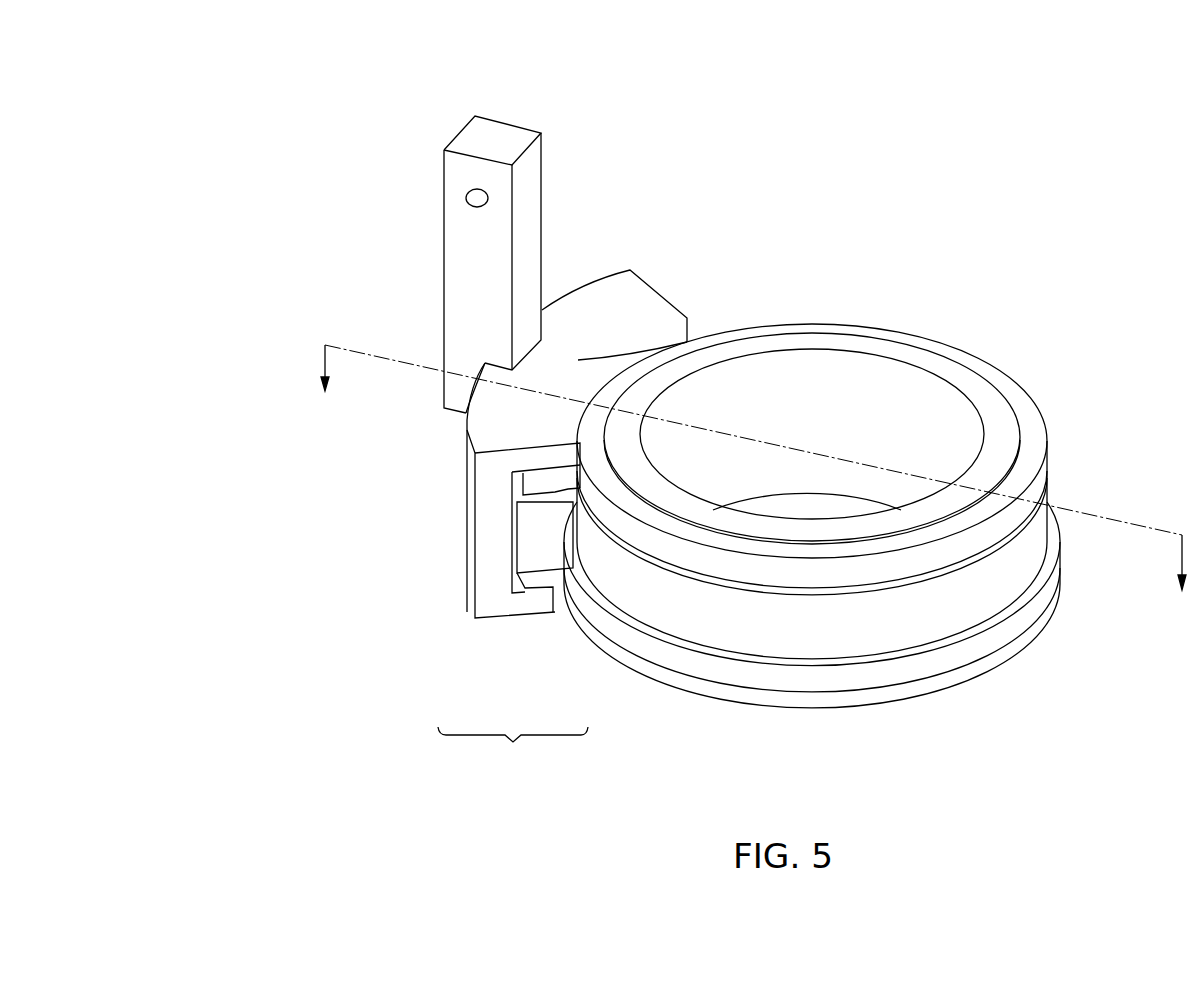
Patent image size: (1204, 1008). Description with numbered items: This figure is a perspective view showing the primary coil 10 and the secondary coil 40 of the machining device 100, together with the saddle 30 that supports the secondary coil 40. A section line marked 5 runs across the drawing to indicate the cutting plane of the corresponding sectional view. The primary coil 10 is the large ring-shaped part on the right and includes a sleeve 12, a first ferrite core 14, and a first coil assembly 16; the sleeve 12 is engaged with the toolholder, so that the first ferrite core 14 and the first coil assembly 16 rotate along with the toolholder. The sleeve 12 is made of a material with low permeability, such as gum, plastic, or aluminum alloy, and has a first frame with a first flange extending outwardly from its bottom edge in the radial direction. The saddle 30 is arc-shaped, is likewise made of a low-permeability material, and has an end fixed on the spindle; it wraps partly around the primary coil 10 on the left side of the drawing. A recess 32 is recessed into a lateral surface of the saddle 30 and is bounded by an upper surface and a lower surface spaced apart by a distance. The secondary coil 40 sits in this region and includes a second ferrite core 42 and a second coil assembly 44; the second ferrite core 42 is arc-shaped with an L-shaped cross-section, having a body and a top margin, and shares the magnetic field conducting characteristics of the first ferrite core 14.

The machining device 100 is at (291, 192).
The primary coil 10 is at (1058, 420).
The sleeve 12 is at (893, 352).
The first ferrite core 14 is at (976, 375).
The first coil assembly 16 is at (975, 597).
The saddle 30 is at (573, 294).
The recess 32 is at (517, 493).
The secondary coil 40 is at (513, 755).
The second ferrite core 42 is at (545, 590).
The second coil assembly 44 is at (525, 538).
The section line 5 is at (753, 487).